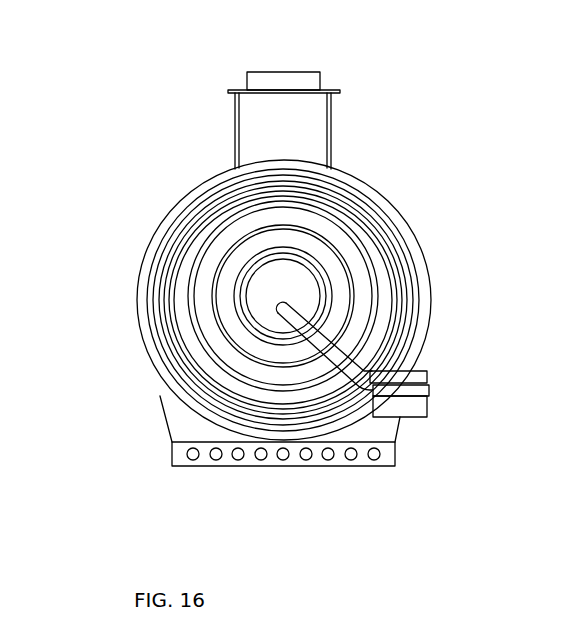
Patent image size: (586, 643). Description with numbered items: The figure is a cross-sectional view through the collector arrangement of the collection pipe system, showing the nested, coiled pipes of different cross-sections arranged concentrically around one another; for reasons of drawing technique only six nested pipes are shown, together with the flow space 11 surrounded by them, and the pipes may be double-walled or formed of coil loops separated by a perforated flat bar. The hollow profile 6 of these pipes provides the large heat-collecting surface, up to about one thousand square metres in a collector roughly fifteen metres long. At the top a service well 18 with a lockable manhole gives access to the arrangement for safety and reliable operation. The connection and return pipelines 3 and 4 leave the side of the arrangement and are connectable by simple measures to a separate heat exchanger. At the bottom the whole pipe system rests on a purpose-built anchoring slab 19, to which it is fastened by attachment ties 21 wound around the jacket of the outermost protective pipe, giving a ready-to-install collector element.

The connection pipeline 3 is at (417, 377).
The return pipeline 4 is at (417, 397).
The hollow profile 6 is at (375, 208).
The flow space 11 is at (223, 208).
The service well 18 is at (272, 90).
The anchoring slab 19 is at (343, 460).
The attachment ties 21 is at (160, 228).